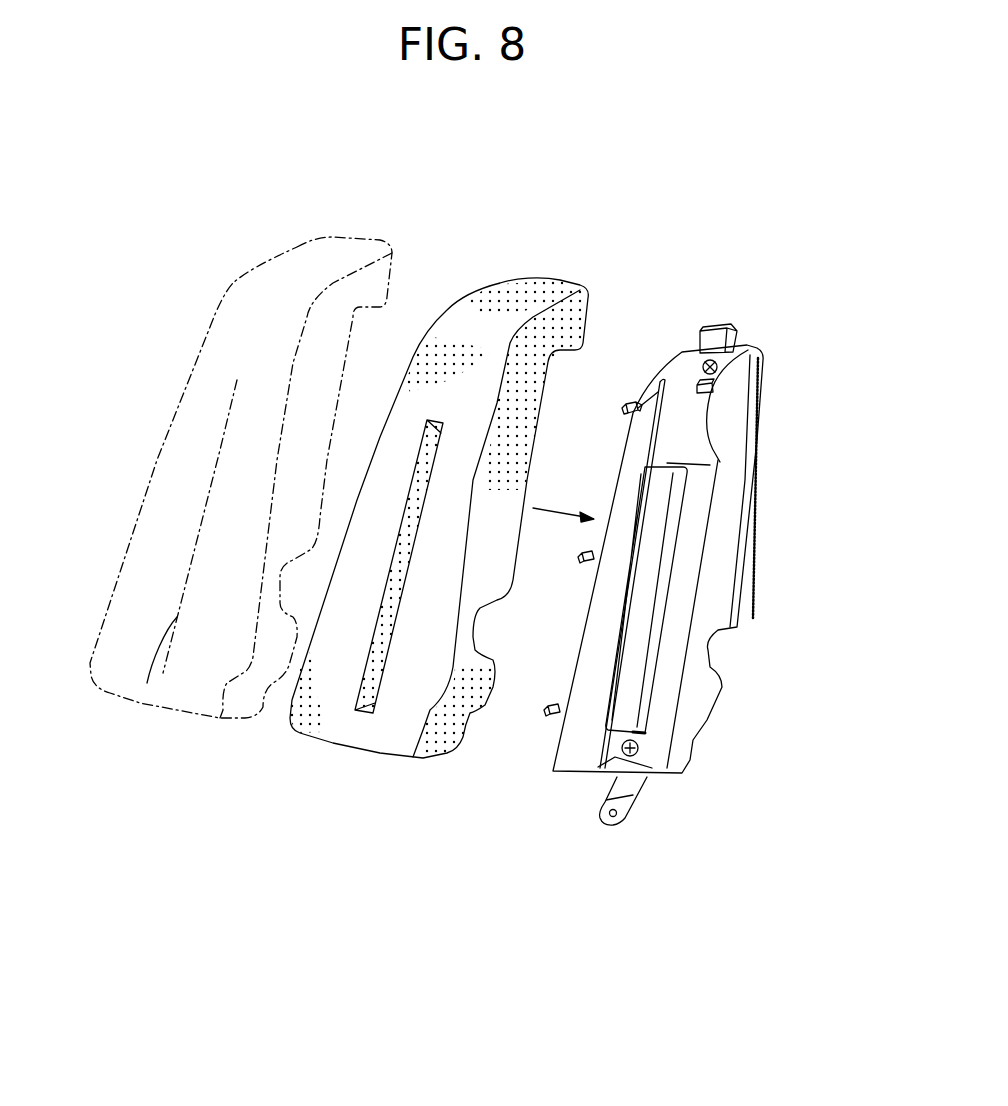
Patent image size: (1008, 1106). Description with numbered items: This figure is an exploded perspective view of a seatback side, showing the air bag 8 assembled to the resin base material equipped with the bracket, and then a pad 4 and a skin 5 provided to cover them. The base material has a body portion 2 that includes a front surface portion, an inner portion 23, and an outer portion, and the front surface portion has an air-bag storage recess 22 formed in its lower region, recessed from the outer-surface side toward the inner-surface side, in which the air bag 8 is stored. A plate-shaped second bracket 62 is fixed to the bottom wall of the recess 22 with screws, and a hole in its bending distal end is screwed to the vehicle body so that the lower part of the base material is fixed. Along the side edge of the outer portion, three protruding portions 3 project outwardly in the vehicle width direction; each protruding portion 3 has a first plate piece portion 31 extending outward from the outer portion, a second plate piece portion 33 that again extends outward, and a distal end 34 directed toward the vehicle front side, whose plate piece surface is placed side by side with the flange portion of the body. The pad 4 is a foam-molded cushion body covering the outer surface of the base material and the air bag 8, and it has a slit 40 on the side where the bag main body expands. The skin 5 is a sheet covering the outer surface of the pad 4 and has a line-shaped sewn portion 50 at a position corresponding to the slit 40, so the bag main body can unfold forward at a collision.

The skin 5 is at (298, 243).
The sewn portion 50 is at (147, 683).
The pad 4 is at (503, 278).
The slit 40 is at (380, 633).
The body portion 2 is at (757, 343).
The inner portion 23 is at (727, 420).
The air bag 8 is at (653, 551).
The air-bag storage recess 22 is at (685, 595).
The second bracket 62 is at (648, 785).
The distal end 34 is at (624, 402).
The first plate piece portion 31 is at (641, 406).
The protruding portion 3 is at (548, 716).
The second plate piece portion 33 is at (636, 415).